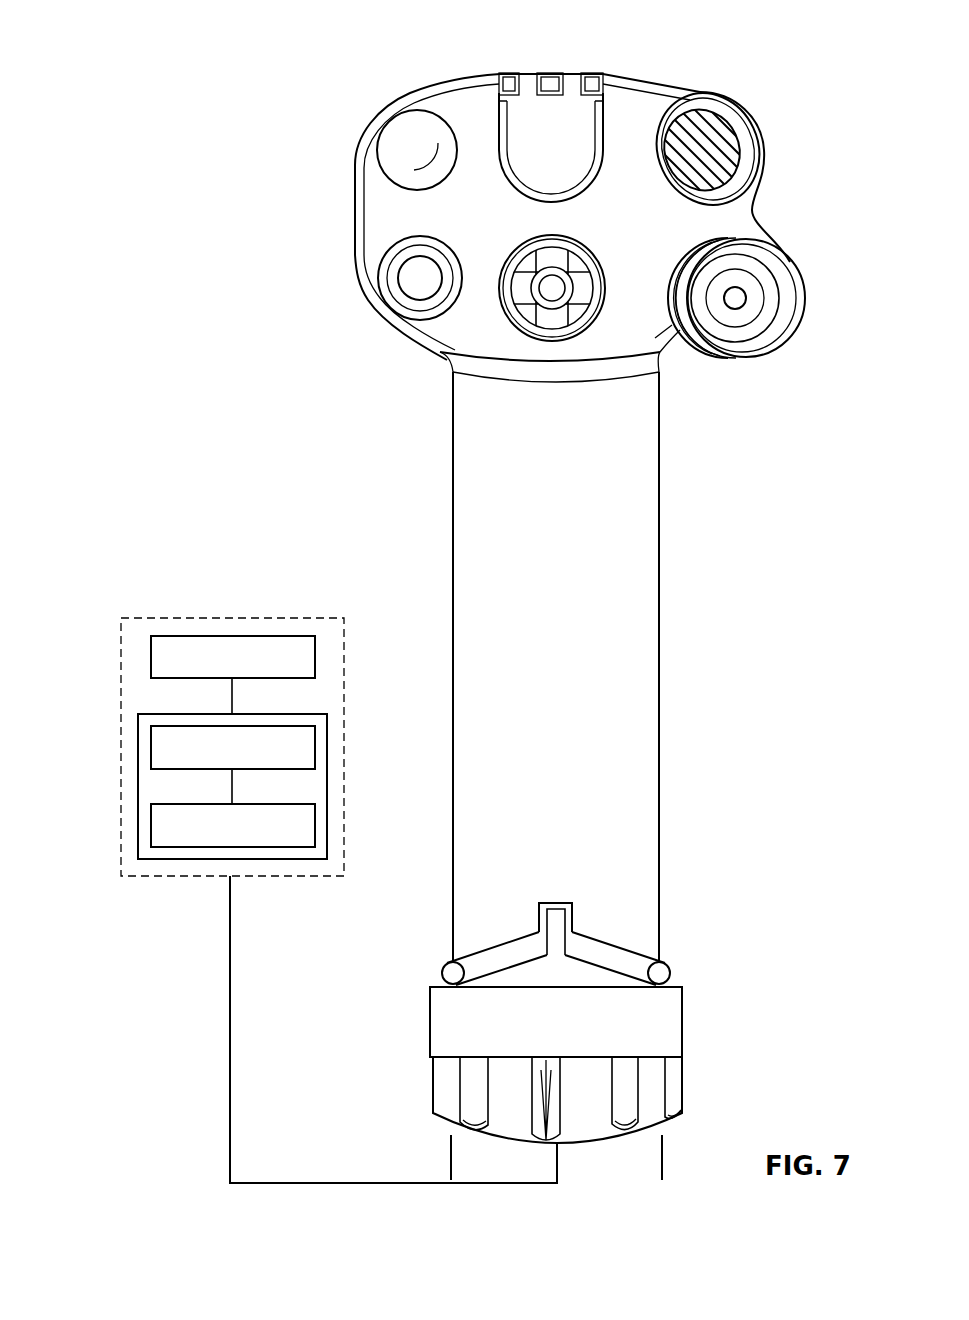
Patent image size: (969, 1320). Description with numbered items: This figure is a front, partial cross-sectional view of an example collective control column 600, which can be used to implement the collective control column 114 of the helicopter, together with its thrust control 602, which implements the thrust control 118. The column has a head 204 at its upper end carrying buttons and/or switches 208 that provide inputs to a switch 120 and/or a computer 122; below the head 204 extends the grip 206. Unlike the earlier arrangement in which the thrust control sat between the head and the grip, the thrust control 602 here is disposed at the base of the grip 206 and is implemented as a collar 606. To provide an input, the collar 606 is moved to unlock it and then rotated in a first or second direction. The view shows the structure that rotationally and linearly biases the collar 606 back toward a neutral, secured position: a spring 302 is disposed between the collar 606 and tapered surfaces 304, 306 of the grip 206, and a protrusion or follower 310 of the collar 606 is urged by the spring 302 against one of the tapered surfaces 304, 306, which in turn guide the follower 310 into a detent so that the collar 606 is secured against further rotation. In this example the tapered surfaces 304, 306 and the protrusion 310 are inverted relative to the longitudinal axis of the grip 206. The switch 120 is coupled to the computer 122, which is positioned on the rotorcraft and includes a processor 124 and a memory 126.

The head 204 is at (536, 193).
The collective control column 600 is at (520, 207).
The collective control column 114 is at (384, 76).
The buttons and/or switches 208 is at (722, 140).
The grip 206 is at (644, 492).
The thrust control 602 is at (606, 1011).
The thrust control 118 is at (536, 1011).
The wave spring 302 is at (661, 969).
The tapered surface 304 is at (606, 942).
The tapered surface 306 is at (498, 943).
The follower 310 is at (555, 950).
The collar 606 is at (443, 1090).
The switch 120 is at (151, 660).
The computer 122 is at (180, 747).
The processor 124 is at (151, 748).
The memory 126 is at (151, 826).